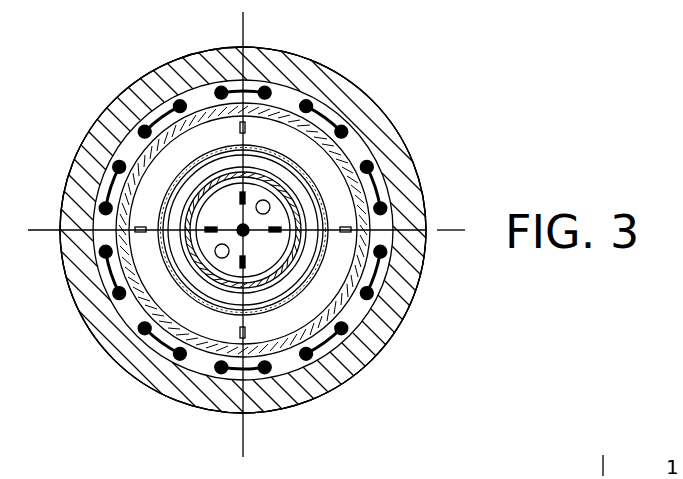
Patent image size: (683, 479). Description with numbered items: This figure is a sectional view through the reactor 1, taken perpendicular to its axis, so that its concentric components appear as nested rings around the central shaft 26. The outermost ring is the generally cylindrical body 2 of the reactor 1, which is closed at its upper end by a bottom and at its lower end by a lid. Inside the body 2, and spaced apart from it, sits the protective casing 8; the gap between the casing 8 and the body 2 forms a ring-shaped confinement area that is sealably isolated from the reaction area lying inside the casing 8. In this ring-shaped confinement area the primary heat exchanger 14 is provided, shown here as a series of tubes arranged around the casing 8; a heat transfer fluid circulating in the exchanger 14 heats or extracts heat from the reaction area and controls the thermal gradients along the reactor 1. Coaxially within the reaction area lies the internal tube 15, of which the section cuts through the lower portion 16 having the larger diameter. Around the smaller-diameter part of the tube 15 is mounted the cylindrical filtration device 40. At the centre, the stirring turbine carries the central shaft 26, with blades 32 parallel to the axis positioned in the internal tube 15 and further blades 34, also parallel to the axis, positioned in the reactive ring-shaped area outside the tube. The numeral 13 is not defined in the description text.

The reactor 1 is at (190, 414).
The body 2 is at (345, 367).
The protective casing 8 is at (340, 168).
The housing outer wall 13 is at (397, 330).
The primary heat exchanger 14 is at (373, 202).
The internal tube 15 is at (323, 290).
The lower portion 16 is at (256, 299).
The central shaft 26 is at (222, 238).
The blades 32 is at (238, 196).
The blades 34 is at (188, 62).
The cylindrical filtration device 40 is at (207, 300).